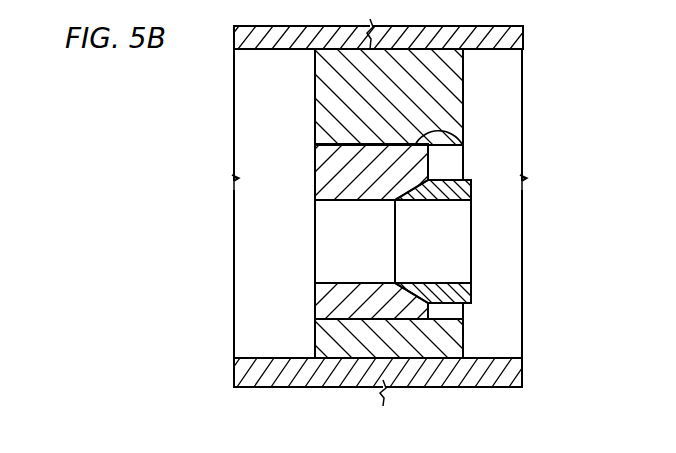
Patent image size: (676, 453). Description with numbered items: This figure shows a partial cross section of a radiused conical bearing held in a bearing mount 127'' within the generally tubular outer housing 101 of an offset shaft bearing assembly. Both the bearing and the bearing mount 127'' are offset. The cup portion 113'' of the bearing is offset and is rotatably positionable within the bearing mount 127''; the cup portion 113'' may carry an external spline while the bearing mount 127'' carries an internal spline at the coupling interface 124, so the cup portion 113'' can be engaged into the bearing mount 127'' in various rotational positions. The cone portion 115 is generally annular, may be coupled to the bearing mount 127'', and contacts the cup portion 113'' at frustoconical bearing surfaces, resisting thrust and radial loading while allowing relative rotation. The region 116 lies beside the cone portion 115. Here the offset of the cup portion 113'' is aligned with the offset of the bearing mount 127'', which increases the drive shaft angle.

The outer housing 101 is at (513, 40).
The bearing mount 127'' is at (437, 203).
The coupling interface 124 is at (447, 130).
The cup portion 113'' is at (319, 231).
The cone portion 115 is at (467, 193).
The space 116 is at (500, 230).